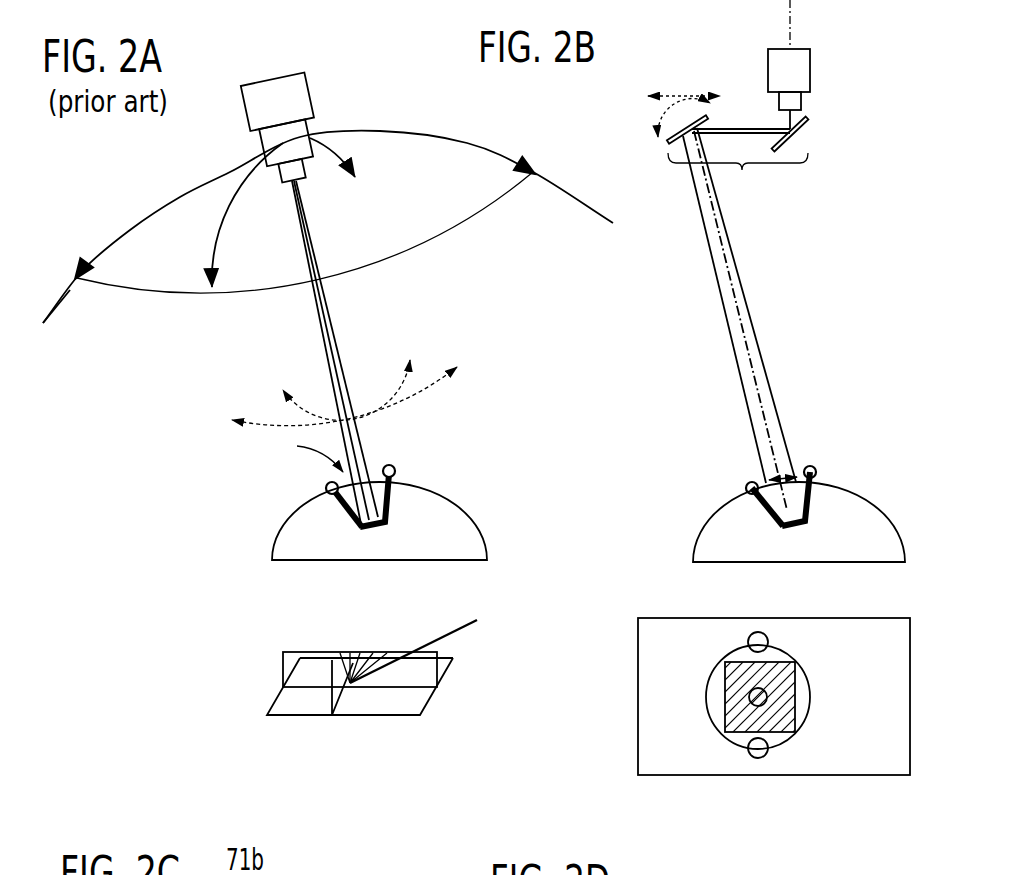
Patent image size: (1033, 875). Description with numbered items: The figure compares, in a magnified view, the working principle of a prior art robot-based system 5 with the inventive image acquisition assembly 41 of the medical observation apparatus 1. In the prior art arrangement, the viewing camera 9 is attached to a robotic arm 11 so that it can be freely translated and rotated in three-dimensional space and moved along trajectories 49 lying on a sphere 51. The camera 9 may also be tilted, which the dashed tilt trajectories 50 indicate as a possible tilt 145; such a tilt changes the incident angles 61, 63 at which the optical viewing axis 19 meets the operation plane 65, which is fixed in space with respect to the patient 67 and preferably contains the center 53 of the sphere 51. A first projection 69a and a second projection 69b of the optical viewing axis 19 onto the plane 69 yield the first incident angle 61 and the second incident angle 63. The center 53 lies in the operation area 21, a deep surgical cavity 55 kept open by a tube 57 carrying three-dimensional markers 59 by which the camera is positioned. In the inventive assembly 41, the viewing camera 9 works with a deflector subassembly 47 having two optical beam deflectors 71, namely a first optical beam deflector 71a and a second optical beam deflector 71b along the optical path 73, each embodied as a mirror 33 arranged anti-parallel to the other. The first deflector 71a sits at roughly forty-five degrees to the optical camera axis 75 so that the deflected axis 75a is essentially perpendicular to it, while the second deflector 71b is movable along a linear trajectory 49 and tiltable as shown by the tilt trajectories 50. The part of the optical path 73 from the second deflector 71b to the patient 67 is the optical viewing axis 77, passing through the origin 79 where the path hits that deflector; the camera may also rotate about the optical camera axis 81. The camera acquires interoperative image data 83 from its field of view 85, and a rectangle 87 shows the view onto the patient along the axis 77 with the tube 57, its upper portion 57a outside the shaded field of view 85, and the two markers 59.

In FIG. 2A, the medical observation apparatus 1 is at (278, 94).
In FIG. 2B, the medical observation apparatus 1 is at (744, 64).
In FIG. 2A, the robot-based system 5 is at (278, 94).
In FIG. 2A, the viewing camera 9 is at (302, 132).
In FIG. 2B, the viewing camera 9 is at (806, 79).
In FIG. 2A, the robotic arm 11 is at (272, 87).
In FIG. 2A, the optical viewing axis 19 is at (333, 322).
In FIG. 2A, the operation area 21 is at (346, 489).
In FIG. 2B, the operation area 21 is at (762, 615).
In FIG. 2B, the mirror 33 is at (769, 187).
In FIG. 2B, the image acquisition assembly 41 is at (744, 64).
In FIG. 2B, the deflector subassembly 47 is at (738, 181).
In FIG. 2A, the trajectory 49 is at (473, 145).
In FIG. 2B, the trajectory 49 is at (661, 94).
In FIG. 2A, the tilt trajectories 50 is at (368, 367).
In FIG. 2B, the tilt trajectories 50 is at (633, 143).
In FIG. 2A, the sphere 51 is at (570, 197).
In FIG. 2A, the center 53 is at (373, 530).
In FIG. 2A, the deep surgical cavity 55 is at (305, 452).
In FIG. 2A, the tube 57 is at (339, 501).
In FIG. 2B, the tube 57 is at (785, 656).
In FIG. 2B, the upper portion of the tube 57a is at (737, 489).
In FIG. 2A, the 3D markers 59 is at (397, 470).
In FIG. 2B, the 3D markers 59 is at (765, 633).
In FIG. 2A, the first incident angle 61 is at (360, 655).
In FIG. 2A, the second incident angle 63 is at (338, 656).
In FIG. 2A, the operation plane 65 is at (450, 672).
In FIG. 2A, the patient 67 is at (455, 522).
In FIG. 2B, the patient 67 is at (803, 628).
In FIG. 2A, the sample plate 69 is at (365, 714).
In FIG. 2A, the first projection 69a is at (384, 664).
In FIG. 2A, the second projection 69b is at (345, 708).
In FIG. 2B, the optical beam deflectors 71 is at (769, 187).
In FIG. 2B, the first optical beam deflector 71a is at (858, 135).
In FIG. 2B, the second optical beam deflector 71b is at (651, 191).
In FIG. 2B, the optical path 73 is at (754, 253).
In FIG. 2B, the optical camera axis 75 is at (808, 118).
In FIG. 2B, the deflected axis 75a is at (735, 128).
In FIG. 2B, the optical viewing axis 77 is at (763, 403).
In FIG. 2B, the origin 79 is at (656, 119).
In FIG. 2B, the optical camera axis 81 is at (794, 37).
In FIG. 2B, the interoperative image data 83 is at (728, 730).
In FIG. 2B, the field of view 85 is at (778, 474).
In FIG. 2B, the rectangle 87 is at (882, 618).
In FIG. 2A, the tilt 145 is at (401, 378).
In FIG. 2B, the tilt 145 is at (634, 101).